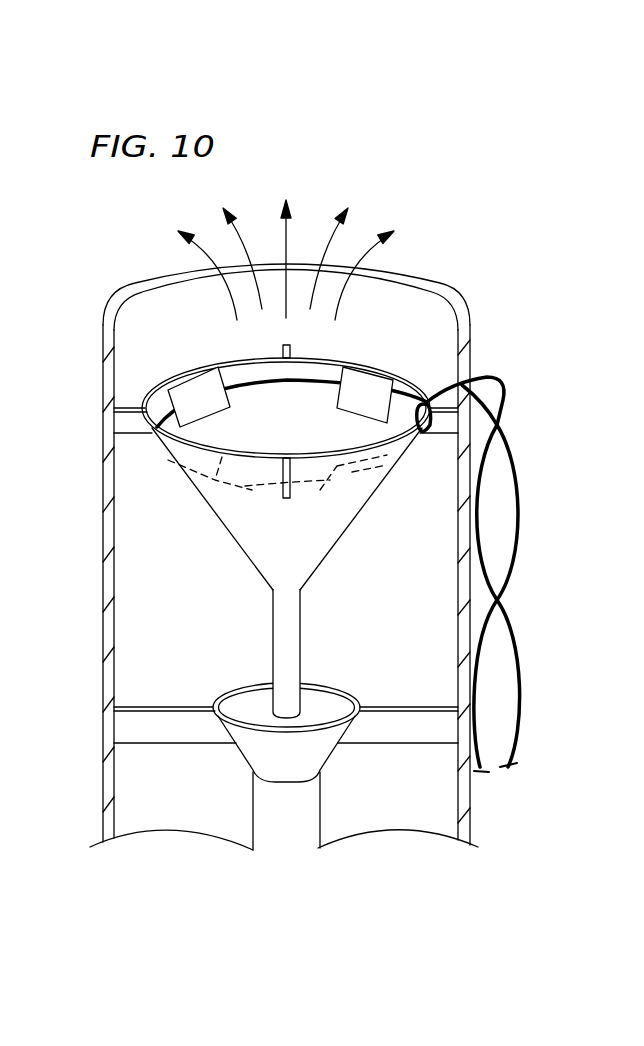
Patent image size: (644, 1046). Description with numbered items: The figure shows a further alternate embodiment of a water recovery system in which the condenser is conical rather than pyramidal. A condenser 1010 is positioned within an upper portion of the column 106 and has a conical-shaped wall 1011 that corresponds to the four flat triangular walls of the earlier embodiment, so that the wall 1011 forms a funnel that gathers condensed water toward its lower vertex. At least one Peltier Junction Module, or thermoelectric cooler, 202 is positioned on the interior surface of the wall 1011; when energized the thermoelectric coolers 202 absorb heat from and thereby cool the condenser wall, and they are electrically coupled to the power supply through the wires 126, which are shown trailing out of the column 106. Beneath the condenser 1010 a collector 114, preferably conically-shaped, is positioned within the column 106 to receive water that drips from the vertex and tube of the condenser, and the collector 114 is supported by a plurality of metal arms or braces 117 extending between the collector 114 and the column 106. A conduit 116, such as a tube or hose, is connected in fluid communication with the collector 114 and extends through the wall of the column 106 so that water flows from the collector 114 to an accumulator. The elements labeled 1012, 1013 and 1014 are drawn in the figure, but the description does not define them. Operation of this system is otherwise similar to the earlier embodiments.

The column 106 is at (108, 646).
The collector 114 is at (244, 703).
The conduit 116 is at (253, 812).
The arms or braces 117 is at (126, 712).
The wires 126 is at (500, 392).
The thermoelectric cooler 202 is at (202, 390).
The condenser 1010 is at (277, 505).
The conical-shaped wall 1011 is at (248, 560).
The neck 1012 is at (262, 598).
The drain pipe 1013 is at (294, 662).
The support plate 1014 is at (296, 353).